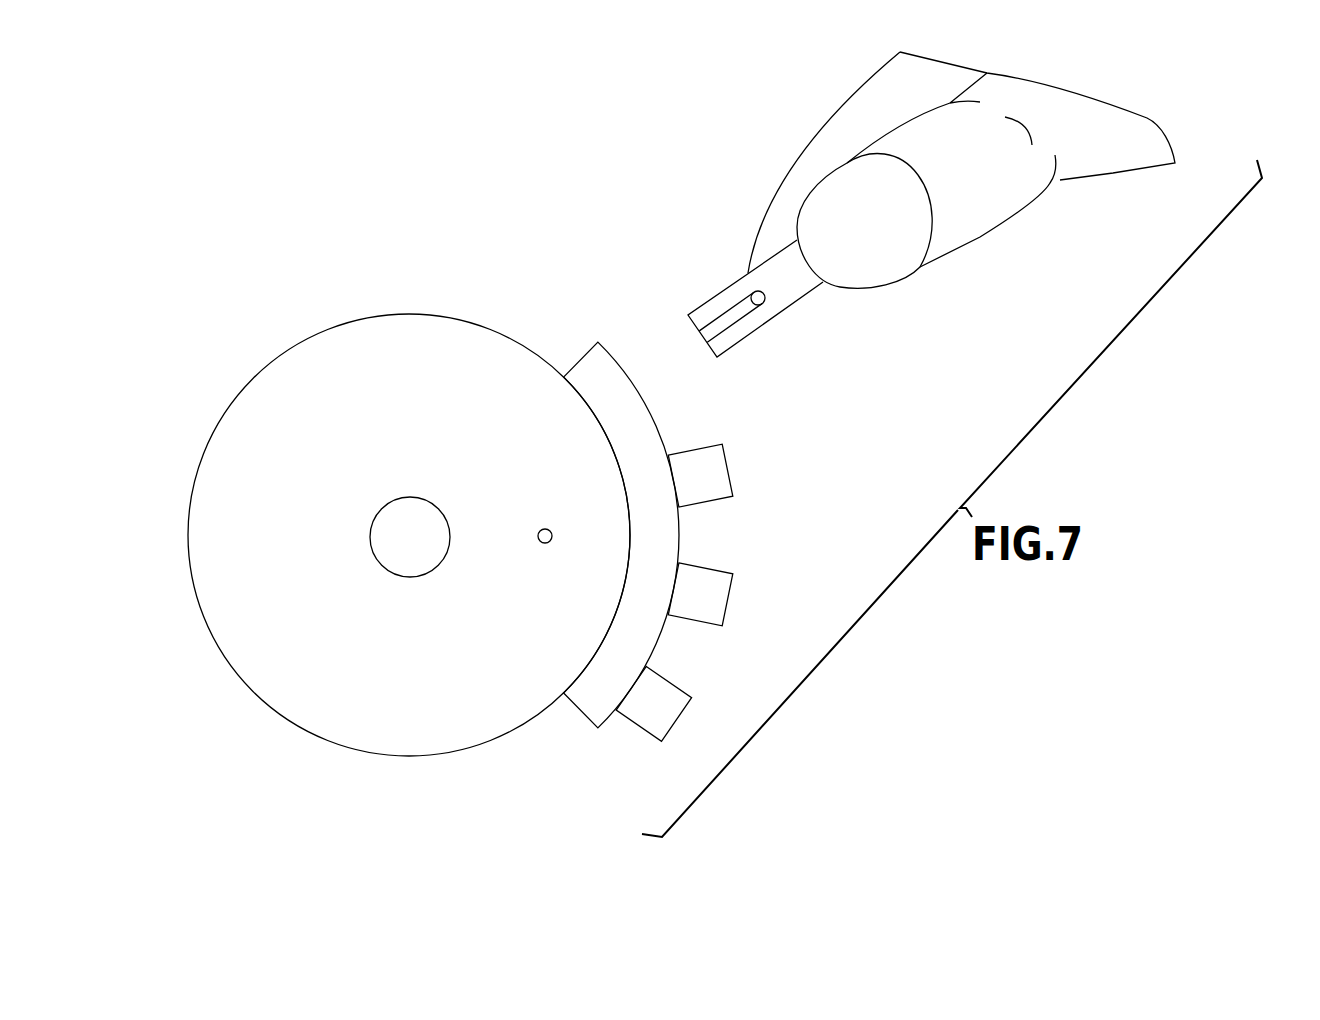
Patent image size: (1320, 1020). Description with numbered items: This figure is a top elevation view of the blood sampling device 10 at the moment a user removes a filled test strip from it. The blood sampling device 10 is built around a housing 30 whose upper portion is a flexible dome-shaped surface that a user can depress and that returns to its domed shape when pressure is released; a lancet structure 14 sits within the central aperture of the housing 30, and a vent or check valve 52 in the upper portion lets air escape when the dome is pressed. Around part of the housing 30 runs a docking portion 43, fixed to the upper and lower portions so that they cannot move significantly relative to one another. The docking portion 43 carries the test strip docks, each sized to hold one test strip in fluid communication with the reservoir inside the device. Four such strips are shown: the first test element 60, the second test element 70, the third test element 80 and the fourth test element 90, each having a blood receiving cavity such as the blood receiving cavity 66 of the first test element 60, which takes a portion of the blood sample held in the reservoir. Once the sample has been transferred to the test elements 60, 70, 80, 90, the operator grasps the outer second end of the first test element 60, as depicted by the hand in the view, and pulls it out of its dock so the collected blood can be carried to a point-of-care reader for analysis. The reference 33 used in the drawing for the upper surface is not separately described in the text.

The blood sampling device 10 is at (250, 270).
The housing 30 is at (218, 648).
The working surface 33 is at (330, 495).
The lancet structure 14 is at (405, 497).
The vent or check valve 52 is at (545, 529).
The docking portion 43 is at (598, 373).
The first test element 60 is at (805, 295).
The blood receiving cavity 66 is at (733, 315).
The second test element 70 is at (700, 447).
The third test element 80 is at (713, 570).
The fourth test element 90 is at (678, 687).